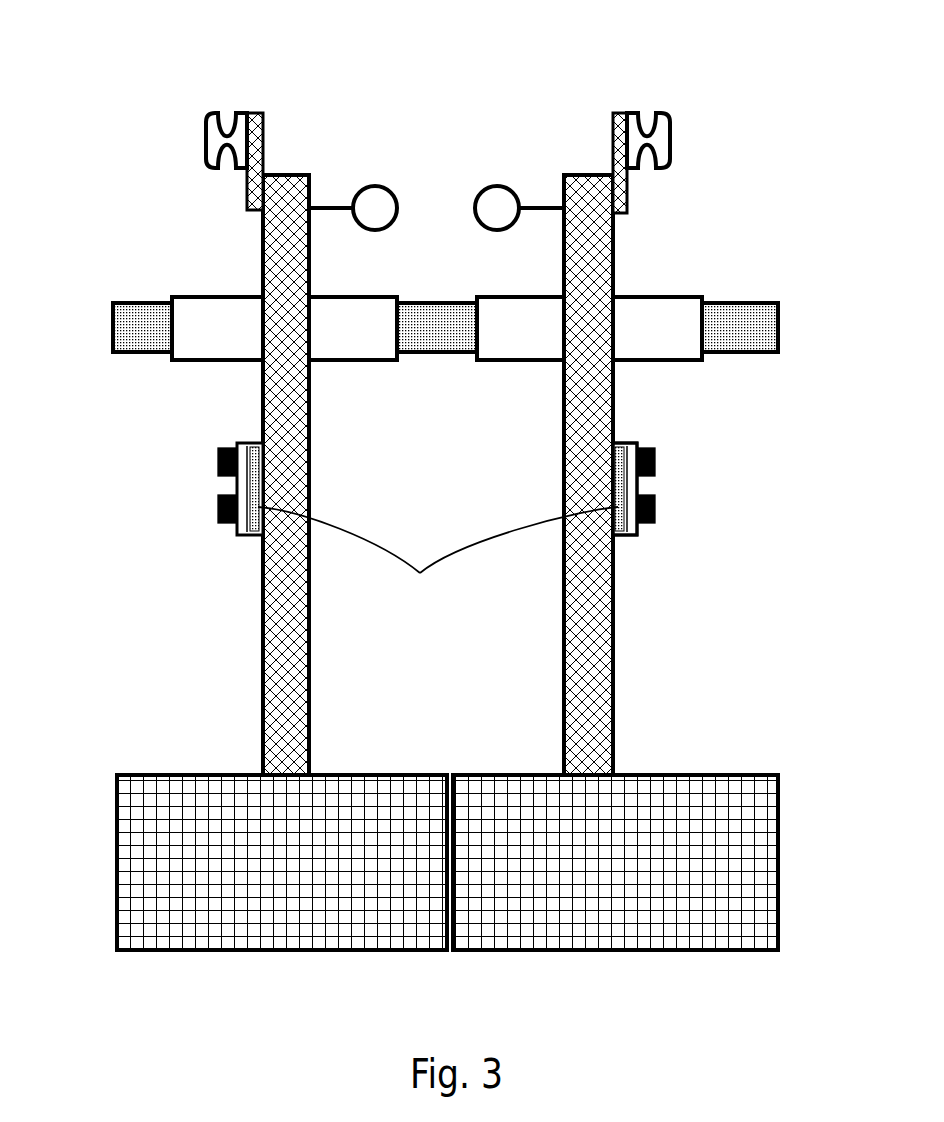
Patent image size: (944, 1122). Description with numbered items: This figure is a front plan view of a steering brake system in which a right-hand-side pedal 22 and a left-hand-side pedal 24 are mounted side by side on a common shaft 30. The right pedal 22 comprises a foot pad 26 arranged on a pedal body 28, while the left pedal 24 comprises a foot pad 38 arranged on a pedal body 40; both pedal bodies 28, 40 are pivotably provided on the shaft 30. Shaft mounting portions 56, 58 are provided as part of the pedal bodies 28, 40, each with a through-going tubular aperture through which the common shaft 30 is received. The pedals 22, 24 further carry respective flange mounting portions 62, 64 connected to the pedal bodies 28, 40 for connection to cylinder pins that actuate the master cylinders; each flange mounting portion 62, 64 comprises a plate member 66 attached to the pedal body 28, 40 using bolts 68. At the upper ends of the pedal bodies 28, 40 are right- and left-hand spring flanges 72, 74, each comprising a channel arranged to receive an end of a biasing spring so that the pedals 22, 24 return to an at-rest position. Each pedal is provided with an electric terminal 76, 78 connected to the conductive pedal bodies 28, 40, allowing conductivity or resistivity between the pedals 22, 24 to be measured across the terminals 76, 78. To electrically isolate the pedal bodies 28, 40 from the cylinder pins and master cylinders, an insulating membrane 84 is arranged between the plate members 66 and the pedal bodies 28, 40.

The right-hand-side pedal 22 is at (730, 128).
The left-hand-side pedal 24 is at (152, 90).
The foot pad 26 is at (697, 905).
The pedal body 28 is at (597, 643).
The shaft 30 is at (430, 345).
The foot pad 38 is at (257, 905).
The pedal body 40 is at (265, 635).
The shaft mounting portion 56 is at (672, 325).
The shaft mounting portion 58 is at (205, 325).
The flange mounting portion 62 is at (637, 443).
The flange mounting portion 64 is at (243, 522).
The plate member 66 is at (237, 443).
The bolts 68 is at (216, 508).
The spring flange 72 is at (638, 140).
The spring flange 74 is at (213, 143).
The electric terminal 76 is at (500, 186).
The electric terminal 78 is at (373, 186).
The insulating membrane 84 is at (438, 557).